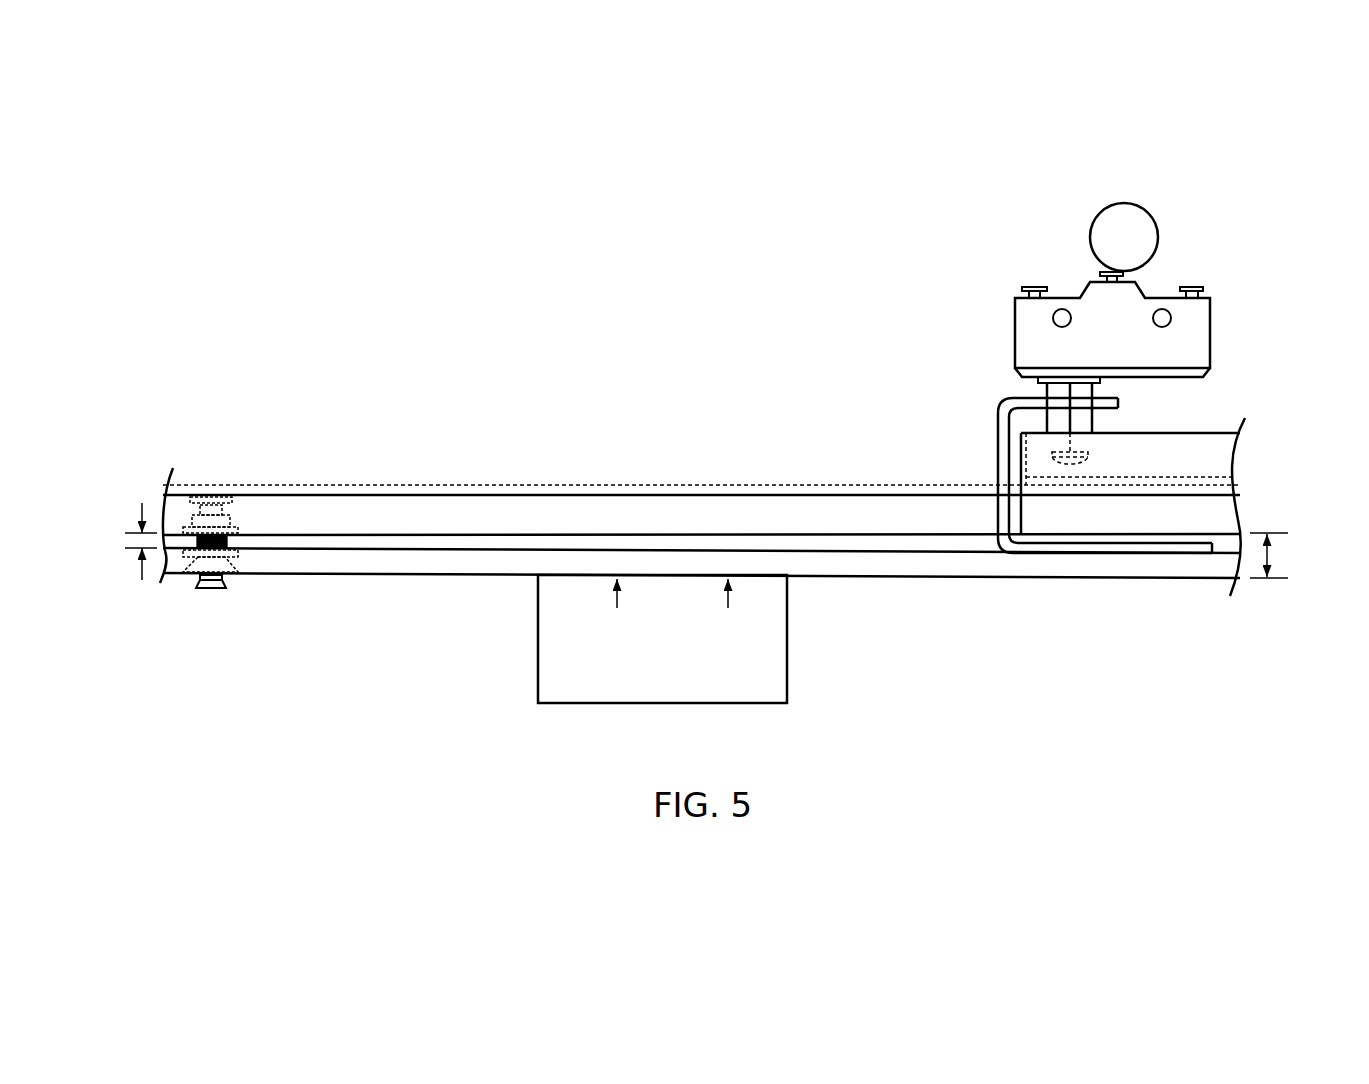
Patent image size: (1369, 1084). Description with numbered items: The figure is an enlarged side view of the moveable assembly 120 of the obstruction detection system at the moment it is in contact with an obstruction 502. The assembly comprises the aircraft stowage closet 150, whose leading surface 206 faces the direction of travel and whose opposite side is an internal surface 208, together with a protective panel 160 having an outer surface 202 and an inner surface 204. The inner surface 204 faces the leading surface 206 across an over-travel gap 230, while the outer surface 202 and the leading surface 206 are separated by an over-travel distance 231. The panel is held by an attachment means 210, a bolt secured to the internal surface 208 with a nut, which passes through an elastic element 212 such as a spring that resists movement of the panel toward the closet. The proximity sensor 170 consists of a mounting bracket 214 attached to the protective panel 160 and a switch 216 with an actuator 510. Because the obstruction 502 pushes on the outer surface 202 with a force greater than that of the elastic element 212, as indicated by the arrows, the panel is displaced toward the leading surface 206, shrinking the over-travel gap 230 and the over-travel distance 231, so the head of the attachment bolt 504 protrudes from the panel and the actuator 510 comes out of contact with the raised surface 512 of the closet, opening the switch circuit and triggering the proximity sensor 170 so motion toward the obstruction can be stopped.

The moveable assembly 120 is at (727, 288).
The aircraft stowage closet 150 is at (287, 512).
The protective panel 160 is at (437, 560).
The proximity sensor 170 is at (987, 365).
The outer surface 202 is at (1015, 581).
The inner surface 204 is at (842, 544).
The leading surface 206 is at (292, 539).
The internal surface 208 is at (583, 489).
The attachment means 210 is at (200, 487).
The elastic element 212 is at (197, 541).
The mounting bracket 214 is at (998, 427).
The switch 216 is at (1202, 332).
The over-travel gap 230 is at (117, 540).
The over-travel distance 231 is at (1280, 553).
The obstruction 502 is at (643, 696).
The head of the attachment bolt 504 is at (213, 584).
The actuator 510 is at (1087, 461).
The raised surface 512 is at (1232, 478).